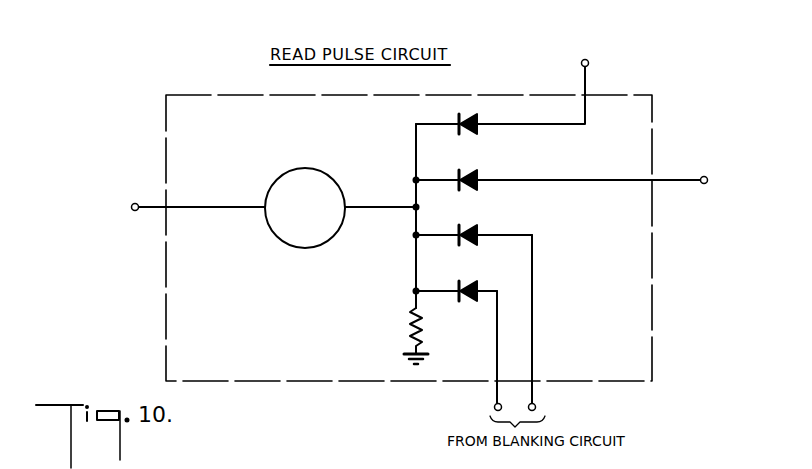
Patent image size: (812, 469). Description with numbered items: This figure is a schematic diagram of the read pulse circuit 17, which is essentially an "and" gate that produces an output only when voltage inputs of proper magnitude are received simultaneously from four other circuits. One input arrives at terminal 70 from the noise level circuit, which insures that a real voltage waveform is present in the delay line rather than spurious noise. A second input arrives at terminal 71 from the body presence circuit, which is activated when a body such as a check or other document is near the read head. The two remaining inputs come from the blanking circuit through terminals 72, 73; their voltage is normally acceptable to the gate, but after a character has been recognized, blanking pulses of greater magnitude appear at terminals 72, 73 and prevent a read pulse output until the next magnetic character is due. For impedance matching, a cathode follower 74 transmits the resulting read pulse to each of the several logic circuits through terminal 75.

The read pulse circuit 17 is at (644, 122).
The terminal 70 is at (589, 65).
The terminal 71 is at (700, 184).
The terminal 72 is at (494, 407).
The terminal 73 is at (536, 407).
The cathode follower 74 is at (334, 184).
The terminal 75 is at (140, 204).